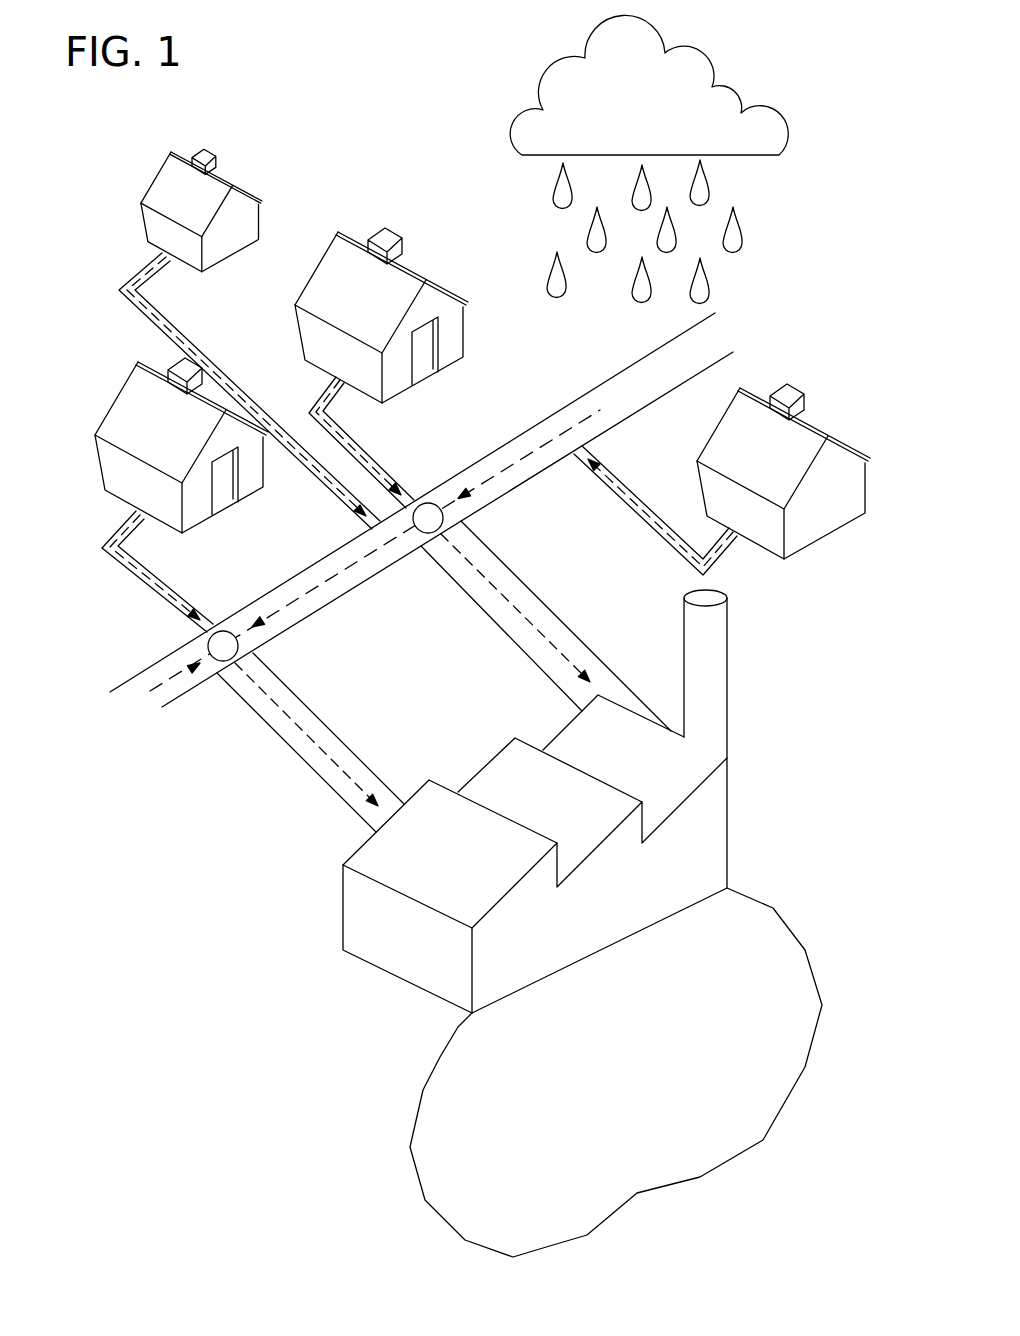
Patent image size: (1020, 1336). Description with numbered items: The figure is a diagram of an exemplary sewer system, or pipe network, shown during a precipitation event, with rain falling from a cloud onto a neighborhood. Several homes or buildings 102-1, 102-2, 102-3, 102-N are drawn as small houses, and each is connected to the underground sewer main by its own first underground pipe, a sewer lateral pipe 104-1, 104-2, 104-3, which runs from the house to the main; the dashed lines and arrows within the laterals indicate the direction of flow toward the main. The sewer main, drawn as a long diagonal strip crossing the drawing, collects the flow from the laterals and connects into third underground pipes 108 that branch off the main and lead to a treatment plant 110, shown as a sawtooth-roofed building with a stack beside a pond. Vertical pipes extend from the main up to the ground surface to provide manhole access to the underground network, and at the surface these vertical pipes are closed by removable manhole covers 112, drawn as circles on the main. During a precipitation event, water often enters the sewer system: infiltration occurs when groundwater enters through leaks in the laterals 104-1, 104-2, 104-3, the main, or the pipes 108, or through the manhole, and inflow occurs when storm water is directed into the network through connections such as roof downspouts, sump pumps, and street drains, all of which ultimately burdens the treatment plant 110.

The home or building 102-1 is at (201, 210).
The home or building 102-2 is at (181, 445).
The home or building 102-3 is at (381, 315).
The home or building 102-N is at (722, 479).
The first underground pipe (sewer lateral pipe) 104-1 is at (197, 343).
The first underground pipe (sewer lateral pipe) 104-2 is at (152, 578).
The first underground pipe (sewer lateral pipe) 104-3 is at (350, 443).
The third underground pipe 108 is at (543, 630).
The treatment plant 110 is at (535, 801).
The removable cover (manhole cover) 112 is at (426, 520).